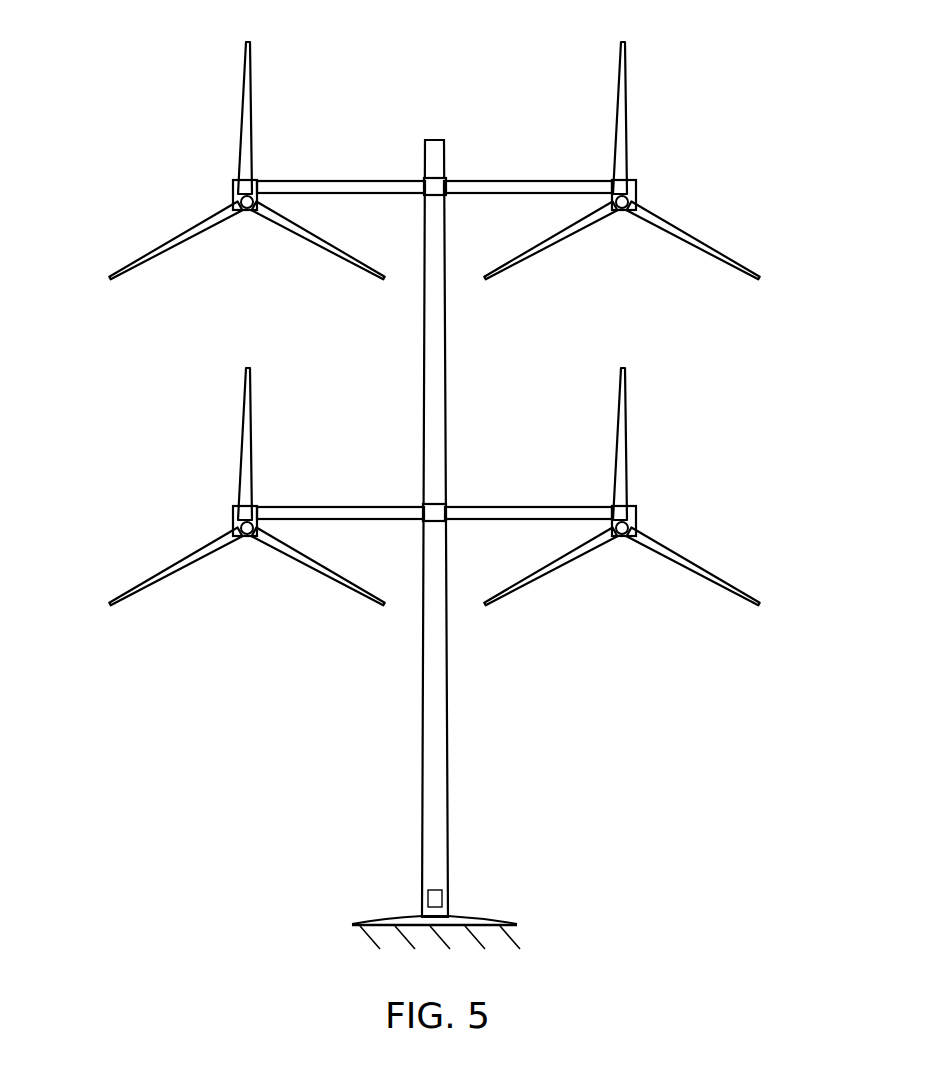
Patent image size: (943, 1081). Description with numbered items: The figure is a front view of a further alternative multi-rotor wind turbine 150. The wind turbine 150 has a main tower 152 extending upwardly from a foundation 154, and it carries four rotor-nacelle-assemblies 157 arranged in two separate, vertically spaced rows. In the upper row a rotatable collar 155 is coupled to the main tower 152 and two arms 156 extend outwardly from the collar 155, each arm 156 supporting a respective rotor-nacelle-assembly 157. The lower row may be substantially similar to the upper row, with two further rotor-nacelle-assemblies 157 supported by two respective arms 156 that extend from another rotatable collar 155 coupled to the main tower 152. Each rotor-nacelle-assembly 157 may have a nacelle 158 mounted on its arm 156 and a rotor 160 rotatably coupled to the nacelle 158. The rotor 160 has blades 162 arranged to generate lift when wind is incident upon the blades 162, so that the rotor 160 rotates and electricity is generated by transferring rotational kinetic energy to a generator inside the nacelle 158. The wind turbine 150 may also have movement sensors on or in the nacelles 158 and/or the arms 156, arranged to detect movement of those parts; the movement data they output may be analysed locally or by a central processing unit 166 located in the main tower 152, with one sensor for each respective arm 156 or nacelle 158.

The multi-rotor wind turbine 150 is at (122, 146).
The main tower 152 is at (448, 767).
The foundation 154 is at (493, 918).
The rotatable collar 155 is at (447, 178).
The arm 156 is at (342, 178).
The rotor-nacelle-assembly 157 is at (229, 191).
The nacelle 158 is at (246, 213).
The rotor 160 is at (449, 353).
The blade 162 is at (252, 70).
The central processing unit 166 is at (443, 898).